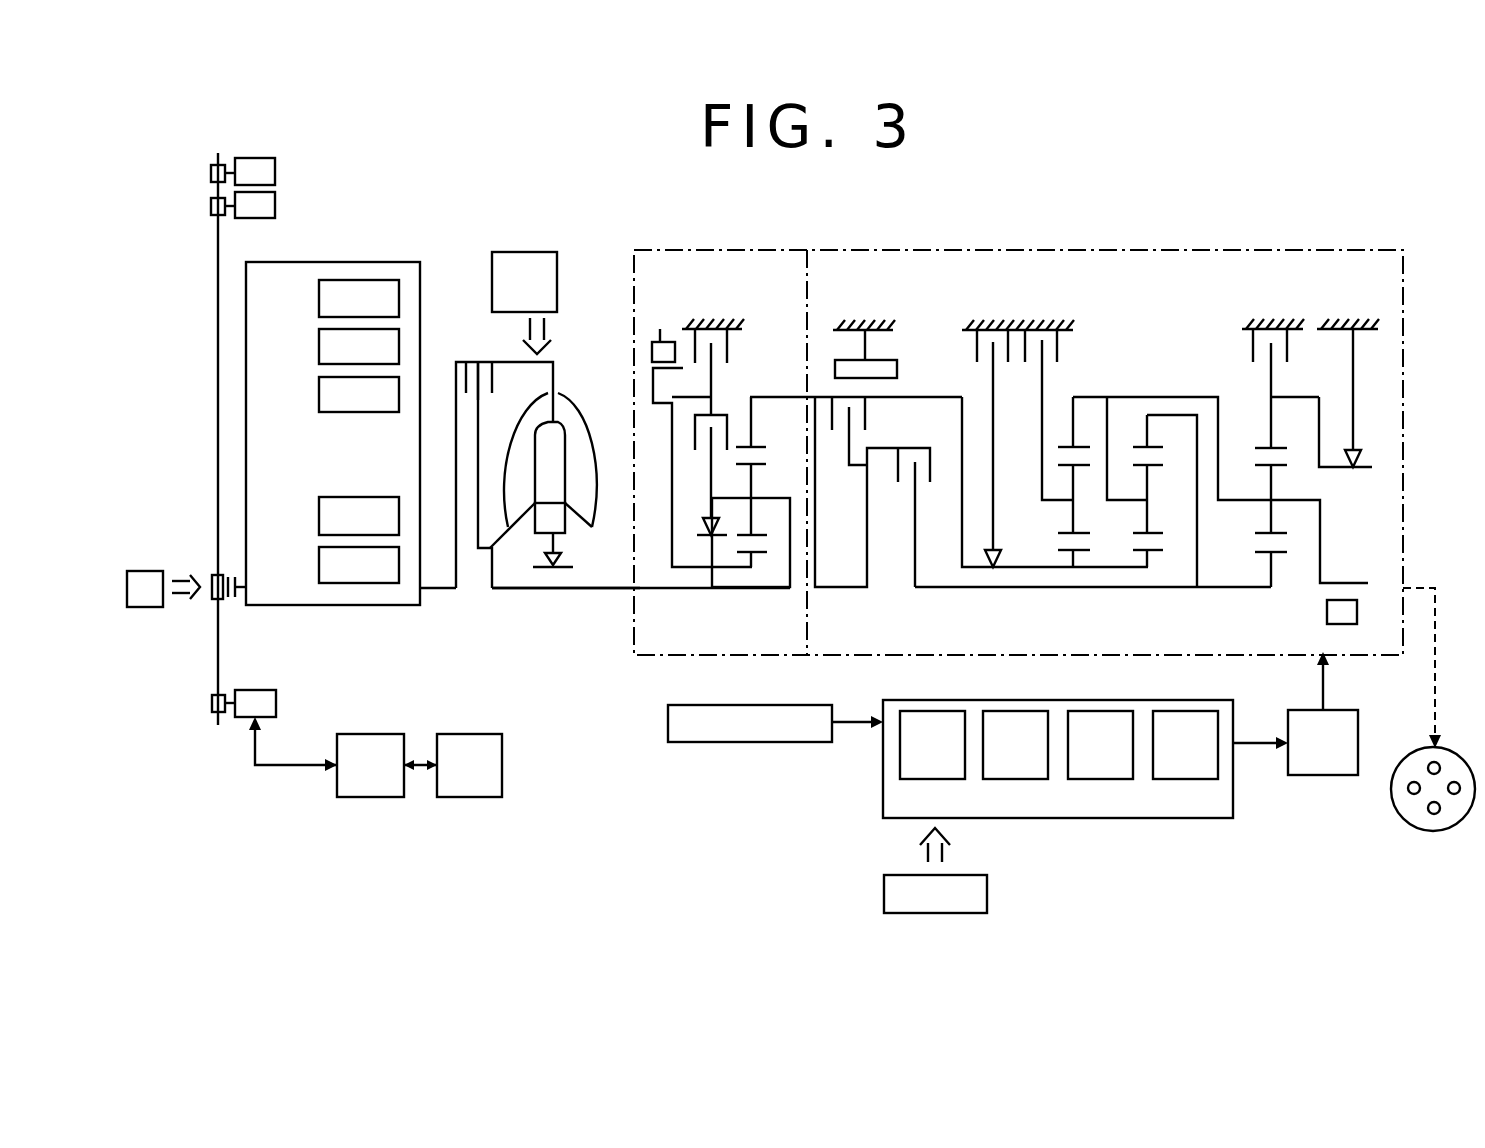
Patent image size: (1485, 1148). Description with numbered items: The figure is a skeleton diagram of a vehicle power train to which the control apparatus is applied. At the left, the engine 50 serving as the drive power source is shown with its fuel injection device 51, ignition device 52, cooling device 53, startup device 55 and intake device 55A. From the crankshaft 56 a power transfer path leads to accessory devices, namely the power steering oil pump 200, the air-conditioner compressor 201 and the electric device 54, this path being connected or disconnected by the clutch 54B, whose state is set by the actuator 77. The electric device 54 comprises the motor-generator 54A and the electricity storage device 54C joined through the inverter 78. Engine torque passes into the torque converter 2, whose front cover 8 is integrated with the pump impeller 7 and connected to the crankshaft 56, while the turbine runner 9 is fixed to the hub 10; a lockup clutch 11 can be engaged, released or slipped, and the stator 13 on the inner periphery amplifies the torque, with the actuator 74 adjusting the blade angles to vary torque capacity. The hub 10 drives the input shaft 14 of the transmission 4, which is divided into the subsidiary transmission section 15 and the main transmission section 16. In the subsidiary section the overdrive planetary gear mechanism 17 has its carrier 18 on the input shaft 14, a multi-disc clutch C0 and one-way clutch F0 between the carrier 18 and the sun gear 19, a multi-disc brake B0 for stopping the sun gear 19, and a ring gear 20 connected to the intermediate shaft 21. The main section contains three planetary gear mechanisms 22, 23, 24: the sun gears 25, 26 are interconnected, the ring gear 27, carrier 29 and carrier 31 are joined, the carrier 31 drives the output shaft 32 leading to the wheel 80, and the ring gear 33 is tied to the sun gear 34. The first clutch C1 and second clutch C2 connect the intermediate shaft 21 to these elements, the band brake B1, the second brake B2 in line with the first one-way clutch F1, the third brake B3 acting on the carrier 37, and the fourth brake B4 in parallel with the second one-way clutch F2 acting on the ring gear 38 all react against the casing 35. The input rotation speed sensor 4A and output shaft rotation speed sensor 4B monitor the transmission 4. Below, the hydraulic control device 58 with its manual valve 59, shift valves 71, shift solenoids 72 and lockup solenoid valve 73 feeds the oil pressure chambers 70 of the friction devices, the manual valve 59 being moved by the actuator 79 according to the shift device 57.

The torque converter 2 is at (568, 345).
The transmission 4 is at (1066, 240).
The input rotation speed sensor 4A is at (652, 352).
The output shaft rotation speed sensor 4B is at (1345, 624).
The pump impeller 7 is at (580, 452).
The front cover 8 is at (455, 392).
The turbine runner 9 is at (510, 460).
The hub 10 is at (490, 560).
The lockup clutch 11 is at (497, 385).
The stator 13 is at (562, 523).
The input shaft 14 is at (553, 592).
The subsidiary transmission section 15 is at (665, 658).
The main transmission section 16 is at (1237, 652).
The planetary gear mechanism 17 is at (762, 572).
The carrier 18 is at (782, 480).
The sun gear 19 is at (740, 545).
The ring gear 20 is at (782, 425).
The intermediate shaft 21 is at (840, 590).
The first planetary gear mechanism 22 is at (1099, 636).
The second planetary gear mechanism 23 is at (1178, 578).
The third planetary gear mechanism 24 is at (1285, 578).
The sun gear 25 is at (1090, 575).
The sun gear 26 is at (1155, 555).
The ring gear 27 is at (1068, 445).
The carrier 29 is at (1140, 505).
The carrier 31 is at (1250, 500).
The output shaft 32 is at (1340, 583).
The ring gear 33 is at (1143, 445).
The sun gear 34 is at (1290, 552).
The casing 35 is at (703, 325).
The carrier 37 is at (1040, 503).
The ring gear 38 is at (1260, 445).
The engine 50 is at (382, 258).
The fuel injection device 51 is at (319, 300).
The ignition device 52 is at (319, 347).
The cooling device 53 is at (319, 394).
The electric device 54 is at (300, 670).
The motor-generator 54A is at (276, 703).
The clutch 54B is at (233, 606).
The electricity storage device 54C is at (490, 797).
The startup device 55 is at (319, 517).
The intake device 55A is at (360, 583).
The crankshaft 56 is at (433, 592).
The shift device 57 is at (685, 730).
The hydraulic control device 58 is at (883, 792).
The manual valve 59 is at (930, 715).
The oil pressure chambers 70 is at (1360, 716).
The shift valves 71 is at (1017, 715).
The shift solenoids 72 is at (1103, 715).
The lockup solenoid valve 73 is at (1188, 715).
The actuator 74 is at (528, 252).
The actuator 77 is at (145, 607).
The inverter 78 is at (372, 797).
The actuator 79 is at (987, 893).
The wheel 80 is at (1405, 818).
The power steering oil pump 200 is at (275, 172).
The air-conditioner compressor 201 is at (275, 205).
The multi-disc brake B0 is at (730, 355).
The first brake B1 is at (880, 365).
The second brake B2 is at (965, 347).
The third brake B3 is at (1062, 345).
The fourth brake B4 is at (1250, 345).
The multi-disc clutch C0 is at (733, 425).
The first clutch C1 is at (930, 465).
The second clutch C2 is at (865, 412).
The one-way clutch F0 is at (690, 535).
The first one-way clutch F1 is at (990, 565).
The second one-way clutch F2 is at (1362, 462).